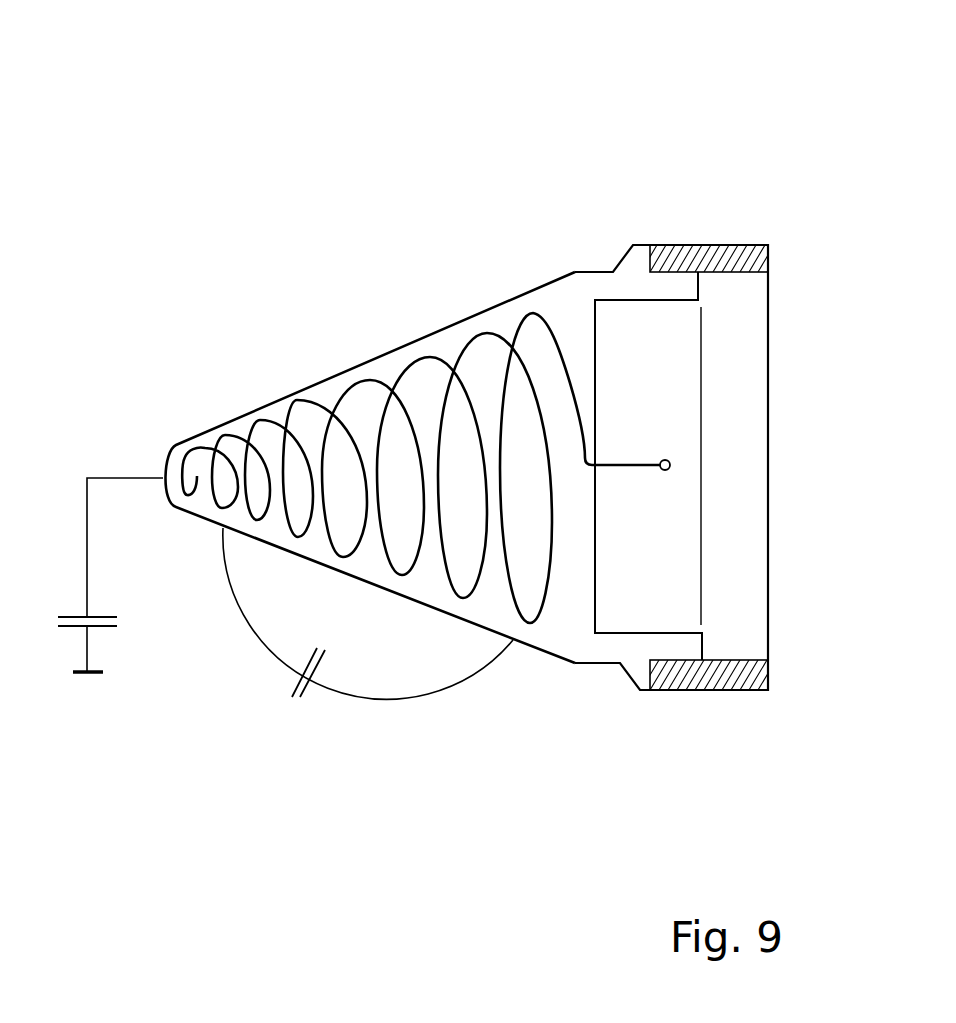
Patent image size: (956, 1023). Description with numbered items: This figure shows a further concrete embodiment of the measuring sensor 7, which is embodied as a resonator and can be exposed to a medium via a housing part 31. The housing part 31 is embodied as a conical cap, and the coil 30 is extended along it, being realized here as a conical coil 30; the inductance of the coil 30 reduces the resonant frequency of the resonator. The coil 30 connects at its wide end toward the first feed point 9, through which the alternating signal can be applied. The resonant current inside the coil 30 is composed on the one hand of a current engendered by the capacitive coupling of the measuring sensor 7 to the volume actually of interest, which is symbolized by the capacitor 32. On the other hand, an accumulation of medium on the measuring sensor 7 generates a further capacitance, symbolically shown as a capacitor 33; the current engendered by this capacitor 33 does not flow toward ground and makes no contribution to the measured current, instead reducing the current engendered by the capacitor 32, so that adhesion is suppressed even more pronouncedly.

The measuring sensor 7 is at (160, 157).
The coil 30 is at (370, 380).
The housing part 31 is at (500, 302).
The first feed point 9 is at (665, 458).
The capacitor 32 is at (108, 627).
The capacitor 33 is at (300, 698).